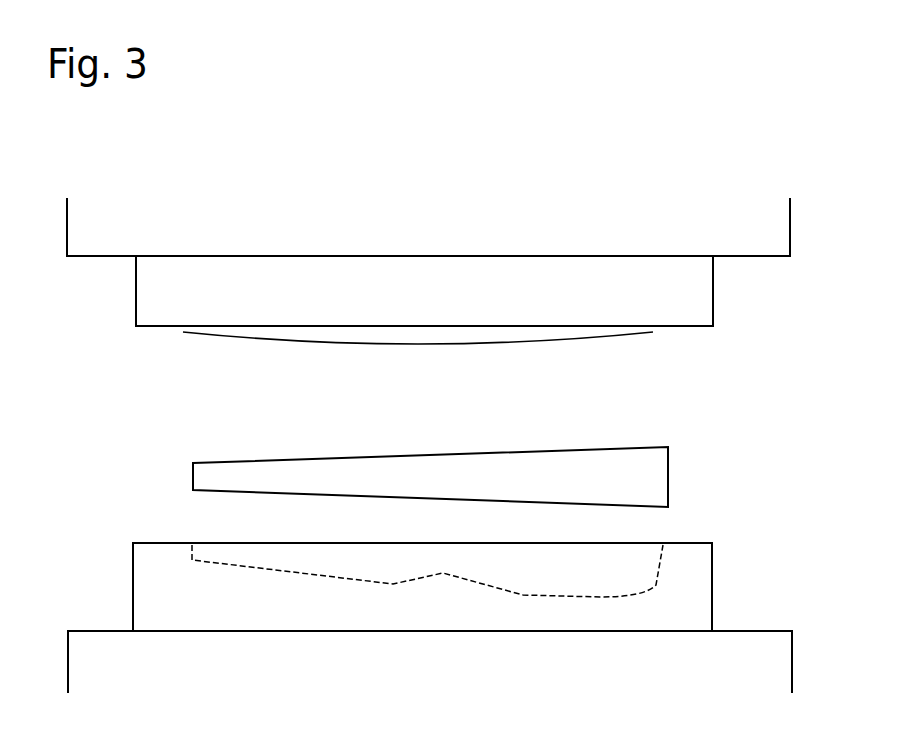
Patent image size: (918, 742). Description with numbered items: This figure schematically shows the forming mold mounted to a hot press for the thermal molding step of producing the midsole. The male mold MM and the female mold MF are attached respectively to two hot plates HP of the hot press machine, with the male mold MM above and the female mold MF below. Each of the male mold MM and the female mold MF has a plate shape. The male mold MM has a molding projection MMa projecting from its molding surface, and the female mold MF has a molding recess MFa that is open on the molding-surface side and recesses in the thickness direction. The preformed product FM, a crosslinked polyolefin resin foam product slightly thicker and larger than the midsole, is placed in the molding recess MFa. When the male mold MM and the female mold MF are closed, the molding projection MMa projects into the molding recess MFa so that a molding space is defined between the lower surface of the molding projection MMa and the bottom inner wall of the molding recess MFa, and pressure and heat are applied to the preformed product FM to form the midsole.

The hot plate HP is at (768, 229).
The male mold MM is at (700, 293).
The molding projection MMa is at (652, 335).
The preformed product FM is at (652, 480).
The female mold MF is at (707, 610).
The molding recess MFa is at (443, 573).